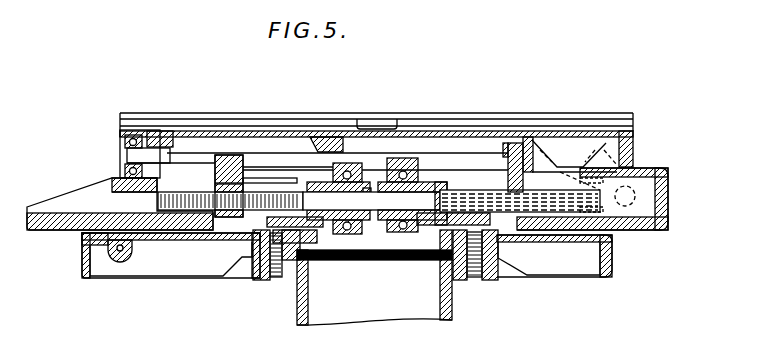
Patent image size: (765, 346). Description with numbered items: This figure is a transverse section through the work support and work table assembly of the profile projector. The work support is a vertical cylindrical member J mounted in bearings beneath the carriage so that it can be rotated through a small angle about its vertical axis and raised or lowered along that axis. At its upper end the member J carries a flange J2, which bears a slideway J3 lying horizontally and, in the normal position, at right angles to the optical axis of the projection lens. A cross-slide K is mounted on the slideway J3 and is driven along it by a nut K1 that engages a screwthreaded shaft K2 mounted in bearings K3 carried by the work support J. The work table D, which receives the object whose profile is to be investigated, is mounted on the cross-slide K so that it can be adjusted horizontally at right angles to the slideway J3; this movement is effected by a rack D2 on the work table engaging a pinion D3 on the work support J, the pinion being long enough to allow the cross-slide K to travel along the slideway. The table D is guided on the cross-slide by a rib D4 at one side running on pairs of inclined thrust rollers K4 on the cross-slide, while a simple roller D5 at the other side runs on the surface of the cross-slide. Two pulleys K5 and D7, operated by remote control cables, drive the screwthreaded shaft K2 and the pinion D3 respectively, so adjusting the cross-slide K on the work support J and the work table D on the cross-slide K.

The work table D is at (412, 132).
The rack D2 is at (507, 185).
The pinion D3 is at (470, 192).
The rib D4 is at (577, 158).
The roller D5 is at (118, 172).
The pulley D7 is at (403, 235).
The cross-slide K is at (95, 200).
The nut K1 is at (227, 170).
The screwthreaded shaft K2 is at (188, 195).
The bearings K3 is at (338, 170).
The inclined thrust rollers K4 is at (623, 173).
The pulley K5 is at (353, 240).
The vertical cylindrical member J is at (293, 280).
The flange J2 is at (100, 253).
The slideway J3 is at (80, 235).